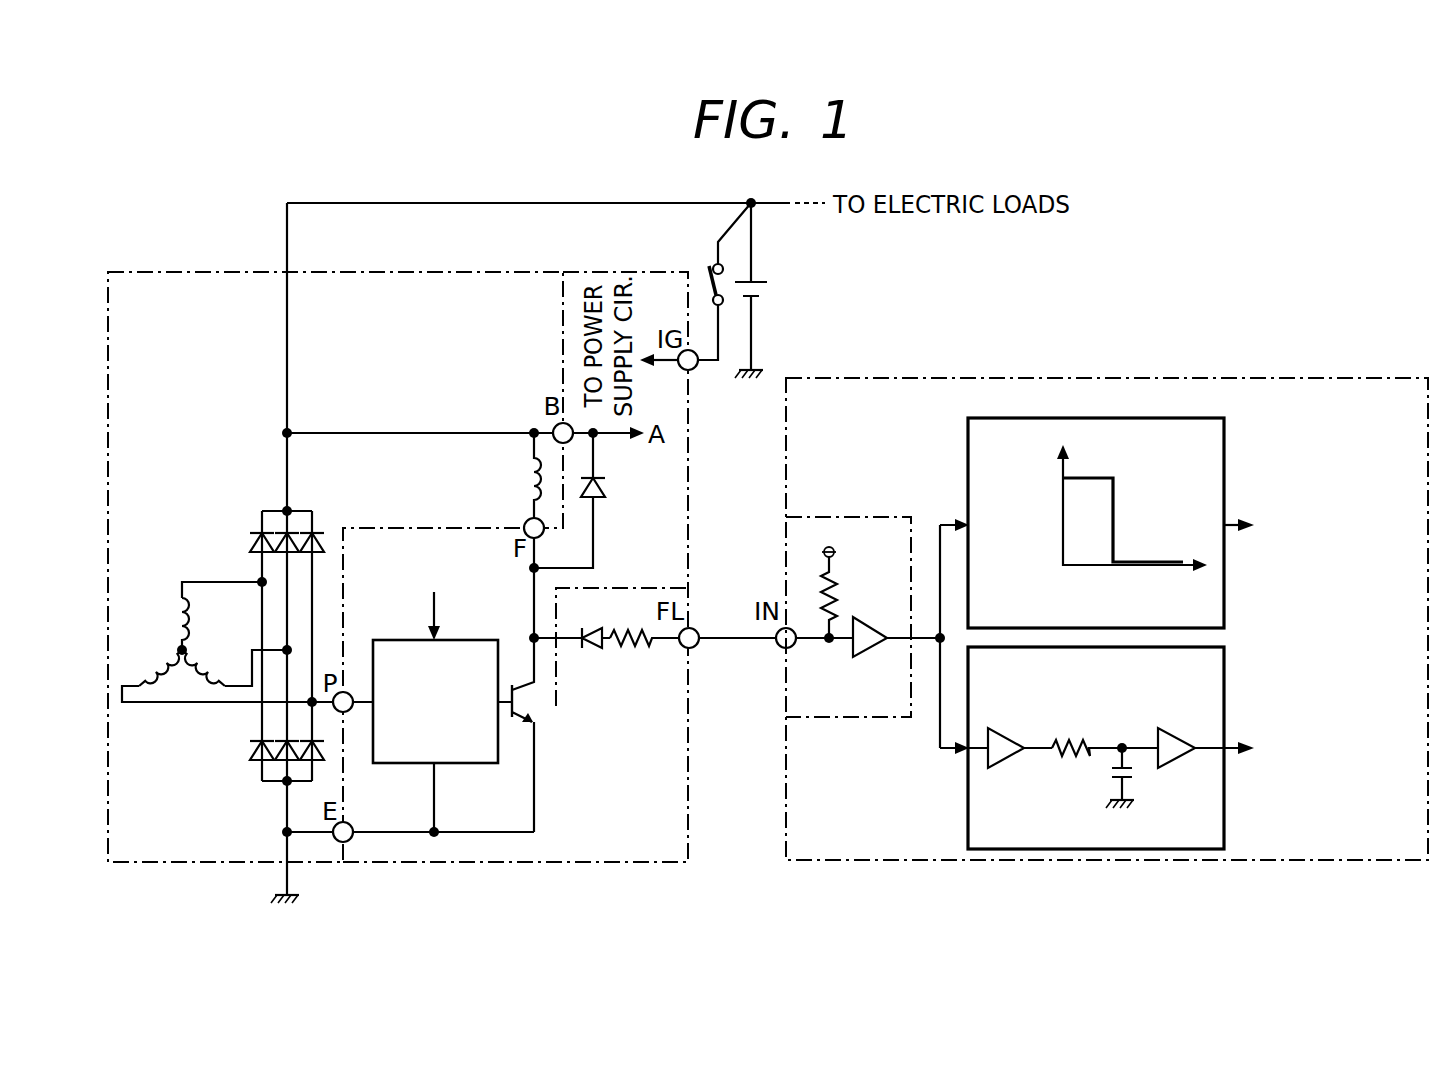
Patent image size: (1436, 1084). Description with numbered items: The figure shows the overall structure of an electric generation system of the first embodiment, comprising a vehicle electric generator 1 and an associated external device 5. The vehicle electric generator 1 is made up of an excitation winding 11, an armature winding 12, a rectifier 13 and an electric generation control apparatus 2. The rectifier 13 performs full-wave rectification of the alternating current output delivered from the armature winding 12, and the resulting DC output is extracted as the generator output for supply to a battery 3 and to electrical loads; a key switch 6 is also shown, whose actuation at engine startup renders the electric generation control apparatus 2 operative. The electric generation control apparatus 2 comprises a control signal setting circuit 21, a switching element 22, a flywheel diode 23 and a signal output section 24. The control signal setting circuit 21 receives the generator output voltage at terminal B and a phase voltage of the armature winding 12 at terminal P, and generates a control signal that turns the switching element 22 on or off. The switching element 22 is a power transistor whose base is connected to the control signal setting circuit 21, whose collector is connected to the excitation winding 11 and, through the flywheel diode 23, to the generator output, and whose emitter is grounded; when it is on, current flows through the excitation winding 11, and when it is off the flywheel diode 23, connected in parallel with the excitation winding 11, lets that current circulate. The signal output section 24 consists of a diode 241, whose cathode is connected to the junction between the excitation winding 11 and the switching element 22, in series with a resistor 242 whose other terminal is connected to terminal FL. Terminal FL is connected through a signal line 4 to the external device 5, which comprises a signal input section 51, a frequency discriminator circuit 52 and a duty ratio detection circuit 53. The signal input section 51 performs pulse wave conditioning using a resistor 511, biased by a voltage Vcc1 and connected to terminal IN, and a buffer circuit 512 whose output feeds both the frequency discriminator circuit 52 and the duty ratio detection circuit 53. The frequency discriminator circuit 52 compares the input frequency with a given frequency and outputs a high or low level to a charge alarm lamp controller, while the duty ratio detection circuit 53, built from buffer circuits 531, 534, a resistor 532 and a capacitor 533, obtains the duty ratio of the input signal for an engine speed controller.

The vehicle electric generator 1 is at (146, 272).
The electric generation control apparatus 2 is at (585, 272).
The battery 3 is at (762, 280).
The signal line 4 is at (730, 635).
The external device 5 is at (857, 378).
The key switch 6 is at (712, 262).
The excitation winding 11 is at (528, 485).
The armature winding 12 is at (180, 648).
The rectifier 13 is at (270, 511).
The control signal setting circuit 21 is at (475, 640).
The switching element 22 is at (540, 712).
The flywheel diode 23 is at (607, 482).
The signal output section 24 is at (640, 588).
The signal input section 51 is at (863, 588).
The frequency discriminator circuit 52 is at (1226, 442).
The duty ratio detection circuit 53 is at (1226, 672).
The diode 241 is at (590, 650).
The resistor 242 is at (632, 648).
The resistor 511 is at (838, 598).
The buffer circuit 512 is at (866, 652).
The buffer circuit 531 is at (1002, 768).
The resistor 532 is at (1075, 740).
The capacitor 533 is at (1112, 776).
The buffer circuit 534 is at (1175, 735).